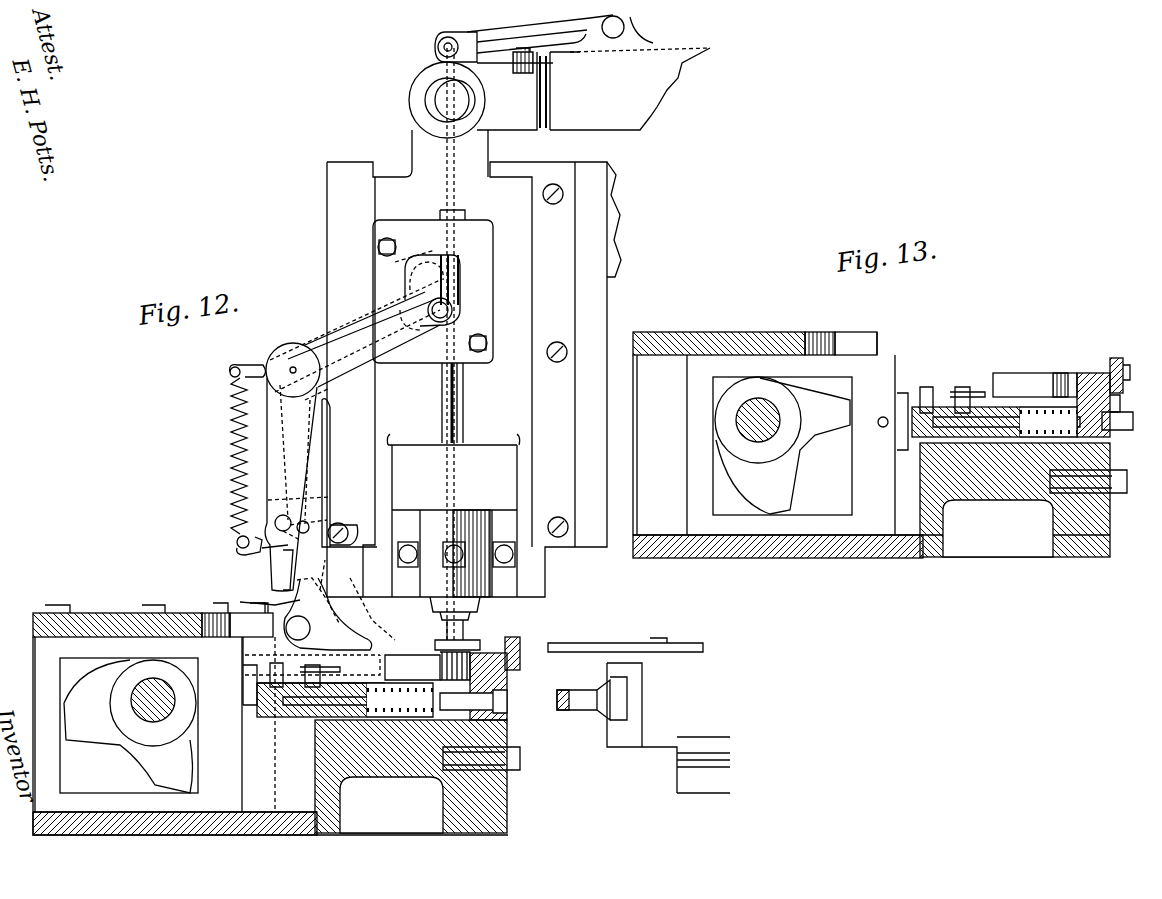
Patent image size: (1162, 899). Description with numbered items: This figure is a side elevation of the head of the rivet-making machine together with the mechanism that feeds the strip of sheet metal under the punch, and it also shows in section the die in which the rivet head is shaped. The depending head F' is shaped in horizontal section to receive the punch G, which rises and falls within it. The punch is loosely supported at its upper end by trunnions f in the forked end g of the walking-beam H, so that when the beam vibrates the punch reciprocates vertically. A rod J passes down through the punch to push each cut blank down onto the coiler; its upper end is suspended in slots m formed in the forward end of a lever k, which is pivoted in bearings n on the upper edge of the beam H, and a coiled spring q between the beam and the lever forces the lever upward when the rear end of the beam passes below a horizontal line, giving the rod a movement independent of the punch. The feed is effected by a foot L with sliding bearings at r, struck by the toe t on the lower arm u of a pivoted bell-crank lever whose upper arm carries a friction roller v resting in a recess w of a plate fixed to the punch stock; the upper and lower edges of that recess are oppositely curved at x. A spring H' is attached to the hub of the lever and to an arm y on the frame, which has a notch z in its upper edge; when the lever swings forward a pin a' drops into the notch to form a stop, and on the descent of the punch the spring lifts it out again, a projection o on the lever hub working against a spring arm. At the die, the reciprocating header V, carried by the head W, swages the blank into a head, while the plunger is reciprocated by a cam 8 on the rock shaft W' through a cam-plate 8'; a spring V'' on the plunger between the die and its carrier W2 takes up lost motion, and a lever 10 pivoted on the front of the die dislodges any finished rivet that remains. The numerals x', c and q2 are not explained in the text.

In FIG. 12, the depending yoke or head F' is at (474, 363).
In FIG. 12, the lever k is at (497, 36).
In FIG. 12, the bearings n is at (645, 28).
In FIG. 12, the slots m is at (430, 48).
In FIG. 12, the beam H is at (593, 89).
In FIG. 12, the coiled spring q is at (512, 66).
In FIG. 12, the bifurcated or forked end g is at (420, 74).
In FIG. 12, the trunnions f is at (425, 104).
In FIG. 12, the reciprocating rod J is at (466, 398).
In FIG. 12, the plate x' is at (327, 490).
In FIG. 12, the curved edges of the recess x is at (432, 295).
In FIG. 12, the recess or opening w is at (430, 292).
In FIG. 12, the friction roller v is at (454, 306).
In FIG. 13, the friction roller v is at (1122, 403).
In FIG. 12, the projection o is at (353, 325).
In FIG. 12, the lower arm u is at (321, 484).
In FIG. 12, the spring H' is at (239, 460).
In FIG. 12, the pin or projection a' is at (316, 499).
In FIG. 12, the notch z is at (310, 525).
In FIG. 12, the arm y is at (259, 560).
In FIG. 12, the toe t is at (297, 566).
In FIG. 12, the cam lever c is at (346, 596).
In FIG. 12, the foot L is at (270, 601).
In FIG. 12, the sliding bearings r is at (320, 640).
In FIG. 12, the punch G is at (470, 628).
In FIG. 12, the carrier of the plunger W2 is at (270, 719).
In FIG. 12, the cam 8 is at (129, 725).
In FIG. 13, the cam 8 is at (782, 446).
In FIG. 12, the rock shaft W' is at (153, 709).
In FIG. 13, the rock shaft W' is at (752, 424).
In FIG. 12, the cam-plate 8' is at (224, 743).
In FIG. 13, the cam-plate 8' is at (871, 445).
In FIG. 12, the header V is at (402, 735).
In FIG. 12, the bar q2 is at (598, 647).
In FIG. 13, the reciprocating head or holder W is at (1022, 465).
In FIG. 13, the spring V'' is at (1035, 385).
In FIG. 13, the lever 10 is at (1125, 375).